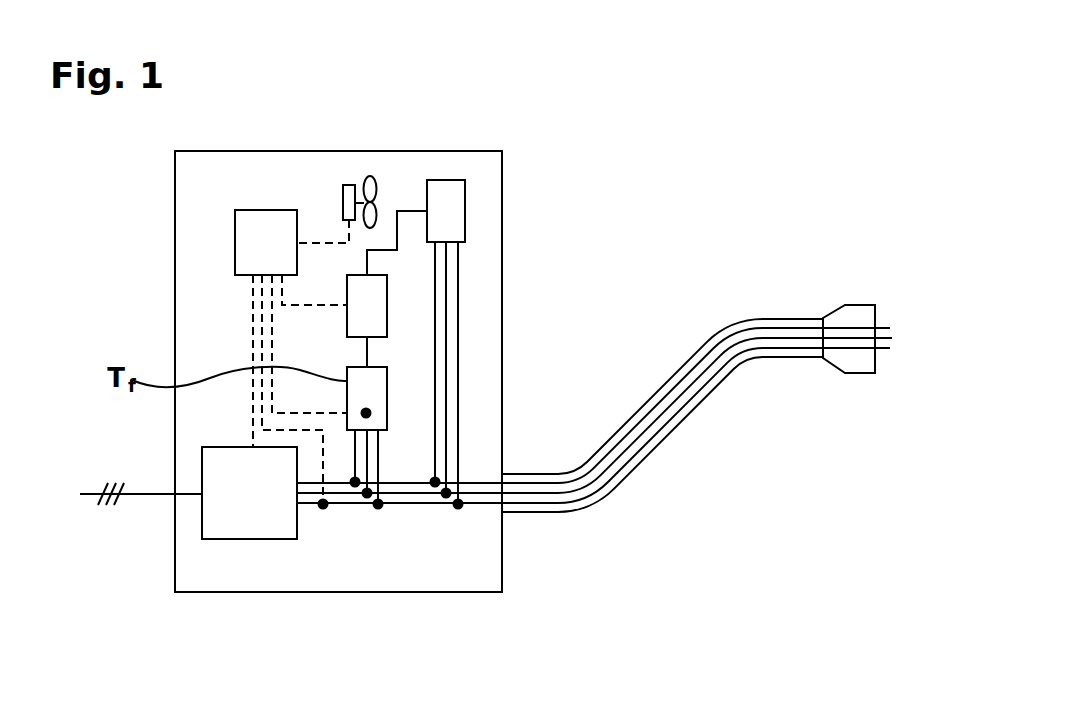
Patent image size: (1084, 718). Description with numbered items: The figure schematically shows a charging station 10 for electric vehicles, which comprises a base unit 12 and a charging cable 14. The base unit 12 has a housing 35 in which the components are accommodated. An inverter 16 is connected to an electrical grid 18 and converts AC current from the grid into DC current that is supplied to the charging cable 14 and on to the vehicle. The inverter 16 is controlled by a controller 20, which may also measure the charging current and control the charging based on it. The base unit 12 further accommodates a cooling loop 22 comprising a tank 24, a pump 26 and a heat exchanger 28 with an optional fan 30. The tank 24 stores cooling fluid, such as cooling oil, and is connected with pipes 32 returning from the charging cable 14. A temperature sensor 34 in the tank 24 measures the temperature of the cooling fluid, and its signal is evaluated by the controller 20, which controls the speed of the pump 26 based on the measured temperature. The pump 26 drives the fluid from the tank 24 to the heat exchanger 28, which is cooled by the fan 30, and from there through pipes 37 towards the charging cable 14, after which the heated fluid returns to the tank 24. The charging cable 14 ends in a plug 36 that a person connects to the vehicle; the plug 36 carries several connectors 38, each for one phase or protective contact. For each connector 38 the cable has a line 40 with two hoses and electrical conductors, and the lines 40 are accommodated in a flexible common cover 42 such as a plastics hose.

The charging station 10 is at (648, 172).
The base unit 12 is at (520, 249).
The charging cable 14 is at (560, 370).
The inverter 16 is at (248, 540).
The electrical grid 18 is at (140, 497).
The controller 20 is at (235, 243).
The cooling loop 22 is at (468, 333).
The tank 24 is at (387, 378).
The pump 26 is at (387, 284).
The heat exchanger 28 is at (446, 180).
The fan 30 is at (349, 185).
The pipes 32 is at (384, 459).
The temperature sensor 34 is at (366, 413).
The housing 35 is at (502, 565).
The plug 36 is at (857, 305).
The pipes 37 is at (468, 363).
The connectors 38 is at (890, 327).
The line 40 is at (683, 373).
The common cover 42 is at (678, 429).